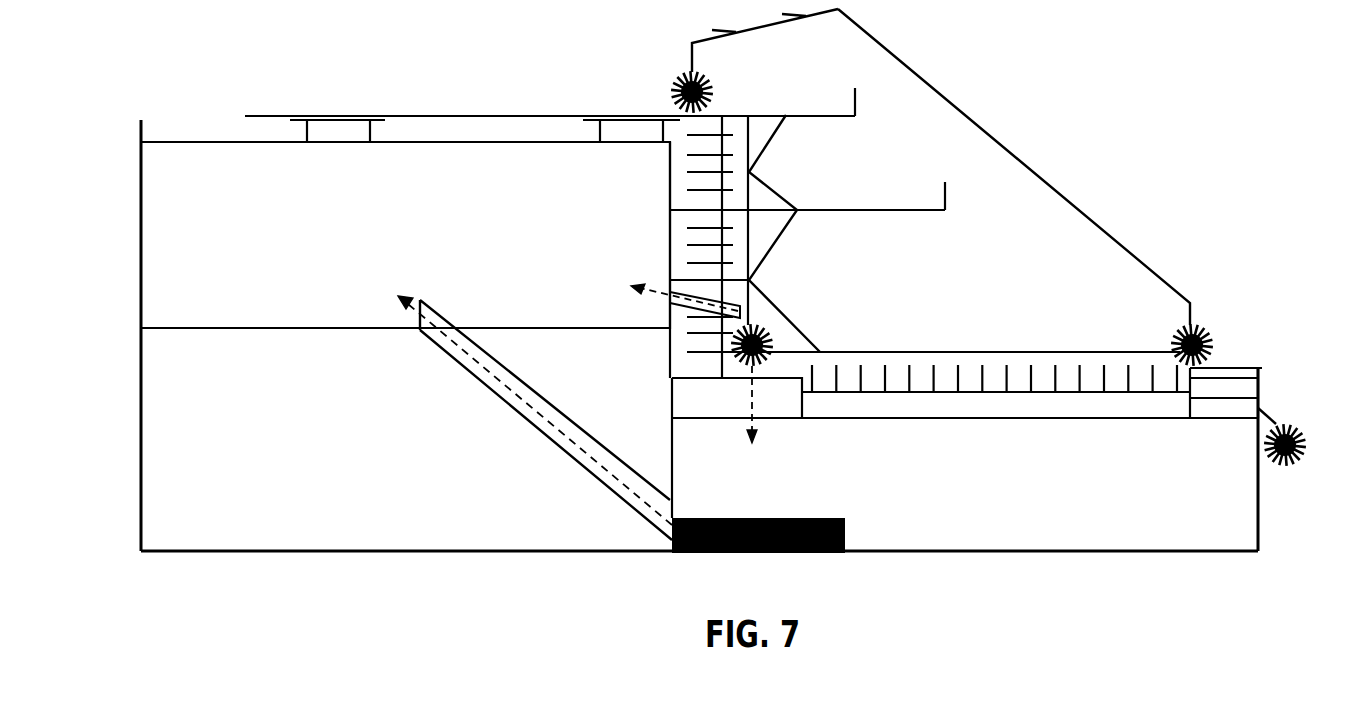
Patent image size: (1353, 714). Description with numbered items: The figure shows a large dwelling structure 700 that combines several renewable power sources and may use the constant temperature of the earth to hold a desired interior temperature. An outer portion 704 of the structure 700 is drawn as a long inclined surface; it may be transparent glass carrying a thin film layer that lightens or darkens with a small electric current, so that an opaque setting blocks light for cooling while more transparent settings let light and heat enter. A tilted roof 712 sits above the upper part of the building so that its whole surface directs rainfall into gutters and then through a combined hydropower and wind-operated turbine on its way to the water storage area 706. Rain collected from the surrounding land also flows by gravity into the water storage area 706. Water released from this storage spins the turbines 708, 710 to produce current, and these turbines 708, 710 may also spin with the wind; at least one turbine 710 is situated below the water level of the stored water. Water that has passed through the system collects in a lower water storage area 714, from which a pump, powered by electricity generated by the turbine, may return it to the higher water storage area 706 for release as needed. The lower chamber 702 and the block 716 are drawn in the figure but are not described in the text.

The large dwelling structure 700 is at (1250, 127).
The lower left chamber with chute 702 is at (432, 470).
The outer portion 704 is at (1104, 238).
The water storage area 706 is at (352, 255).
The turbine 708 is at (676, 86).
The turbine 710 is at (758, 322).
The roof 712 is at (206, 80).
The lower water storage area 714 is at (1094, 506).
The collection block 716 is at (727, 518).